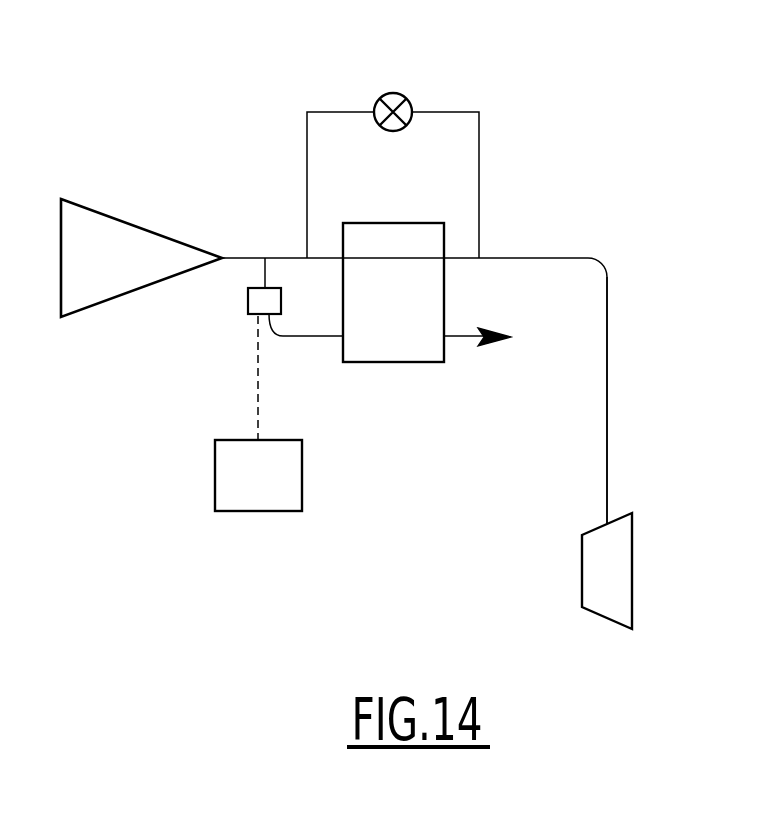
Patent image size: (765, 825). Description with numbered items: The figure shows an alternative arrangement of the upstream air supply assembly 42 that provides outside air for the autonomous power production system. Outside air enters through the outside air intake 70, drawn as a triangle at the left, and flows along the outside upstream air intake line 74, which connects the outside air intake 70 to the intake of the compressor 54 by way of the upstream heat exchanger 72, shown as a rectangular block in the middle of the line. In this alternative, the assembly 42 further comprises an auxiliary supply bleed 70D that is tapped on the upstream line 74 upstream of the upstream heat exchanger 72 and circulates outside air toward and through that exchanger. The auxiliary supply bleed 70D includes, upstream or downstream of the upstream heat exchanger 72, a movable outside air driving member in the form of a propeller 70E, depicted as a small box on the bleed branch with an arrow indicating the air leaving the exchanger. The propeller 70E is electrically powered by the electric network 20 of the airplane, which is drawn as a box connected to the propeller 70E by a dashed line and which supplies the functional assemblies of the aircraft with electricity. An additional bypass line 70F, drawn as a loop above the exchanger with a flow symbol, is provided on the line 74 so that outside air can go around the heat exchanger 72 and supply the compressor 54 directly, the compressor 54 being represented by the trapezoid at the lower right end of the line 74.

The upstream air supply assembly 42 is at (590, 126).
The outside air intake 70 is at (92, 272).
The auxiliary supply bleed 70D is at (262, 272).
The propeller 70E is at (247, 305).
The additional bypass line 70F is at (307, 157).
The upstream heat exchanger 72 is at (380, 307).
The outside upstream air intake line 74 is at (607, 312).
The compressor 54 is at (594, 586).
The electric network 20 is at (245, 489).